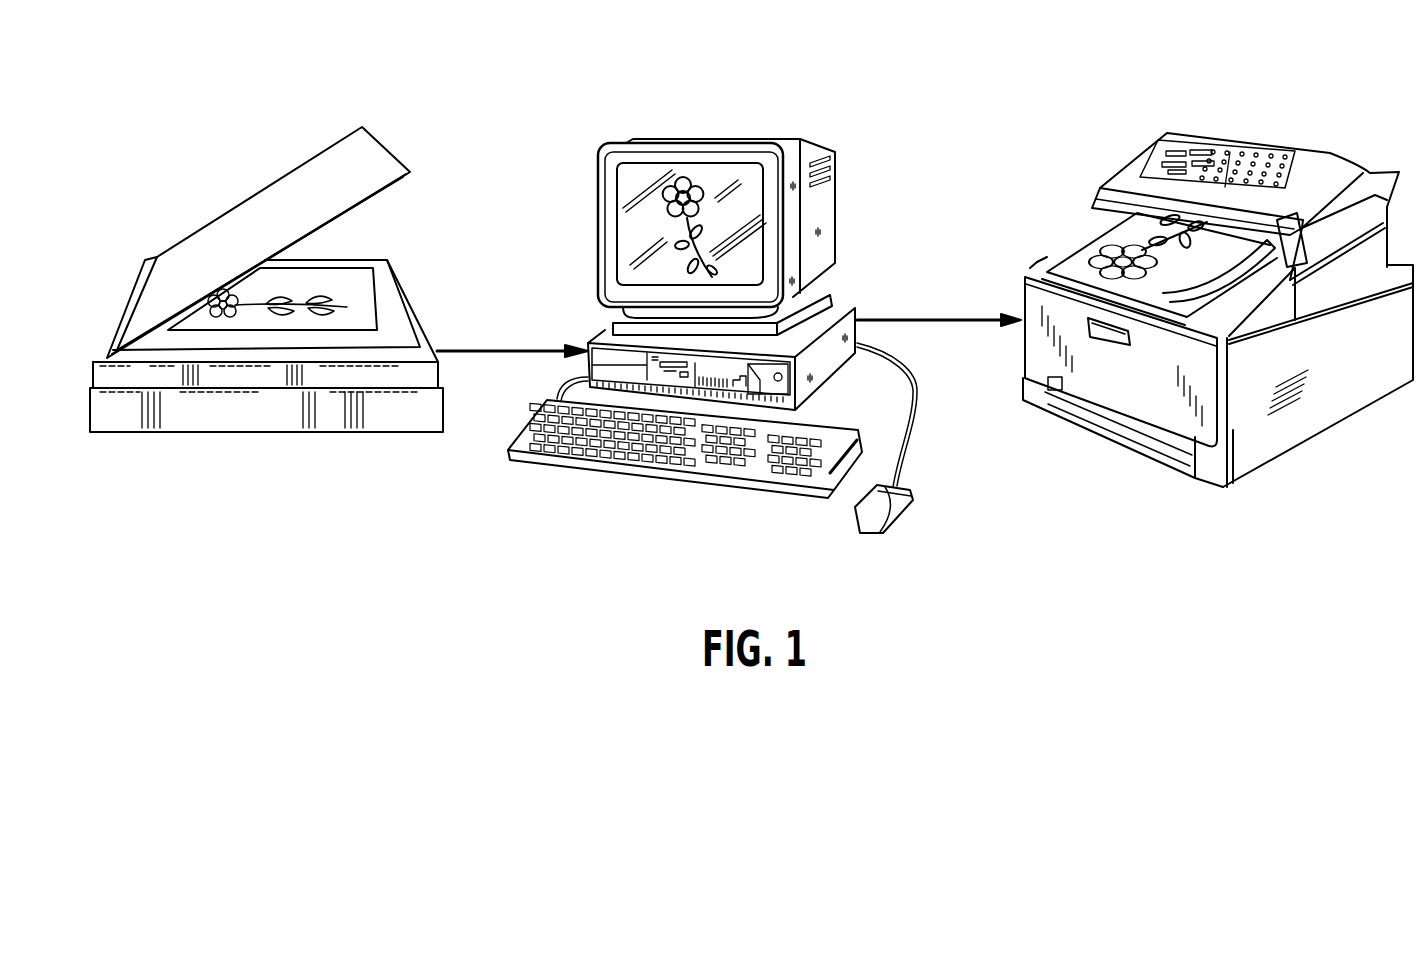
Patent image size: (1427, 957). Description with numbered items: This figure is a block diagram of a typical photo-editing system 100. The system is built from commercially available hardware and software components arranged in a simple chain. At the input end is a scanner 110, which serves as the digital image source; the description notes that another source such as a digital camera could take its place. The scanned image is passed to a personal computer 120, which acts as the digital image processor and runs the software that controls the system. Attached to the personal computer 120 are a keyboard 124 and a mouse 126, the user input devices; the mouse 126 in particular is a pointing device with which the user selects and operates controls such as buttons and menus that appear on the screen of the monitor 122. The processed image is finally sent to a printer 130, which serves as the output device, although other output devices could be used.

The photo-editing system 100 is at (423, 593).
The scanner 110 is at (240, 198).
The personal computer 120 is at (838, 160).
The monitor 122 is at (713, 173).
The keyboard 124 is at (600, 476).
The mouse 126 is at (893, 513).
The printer 130 is at (1328, 145).